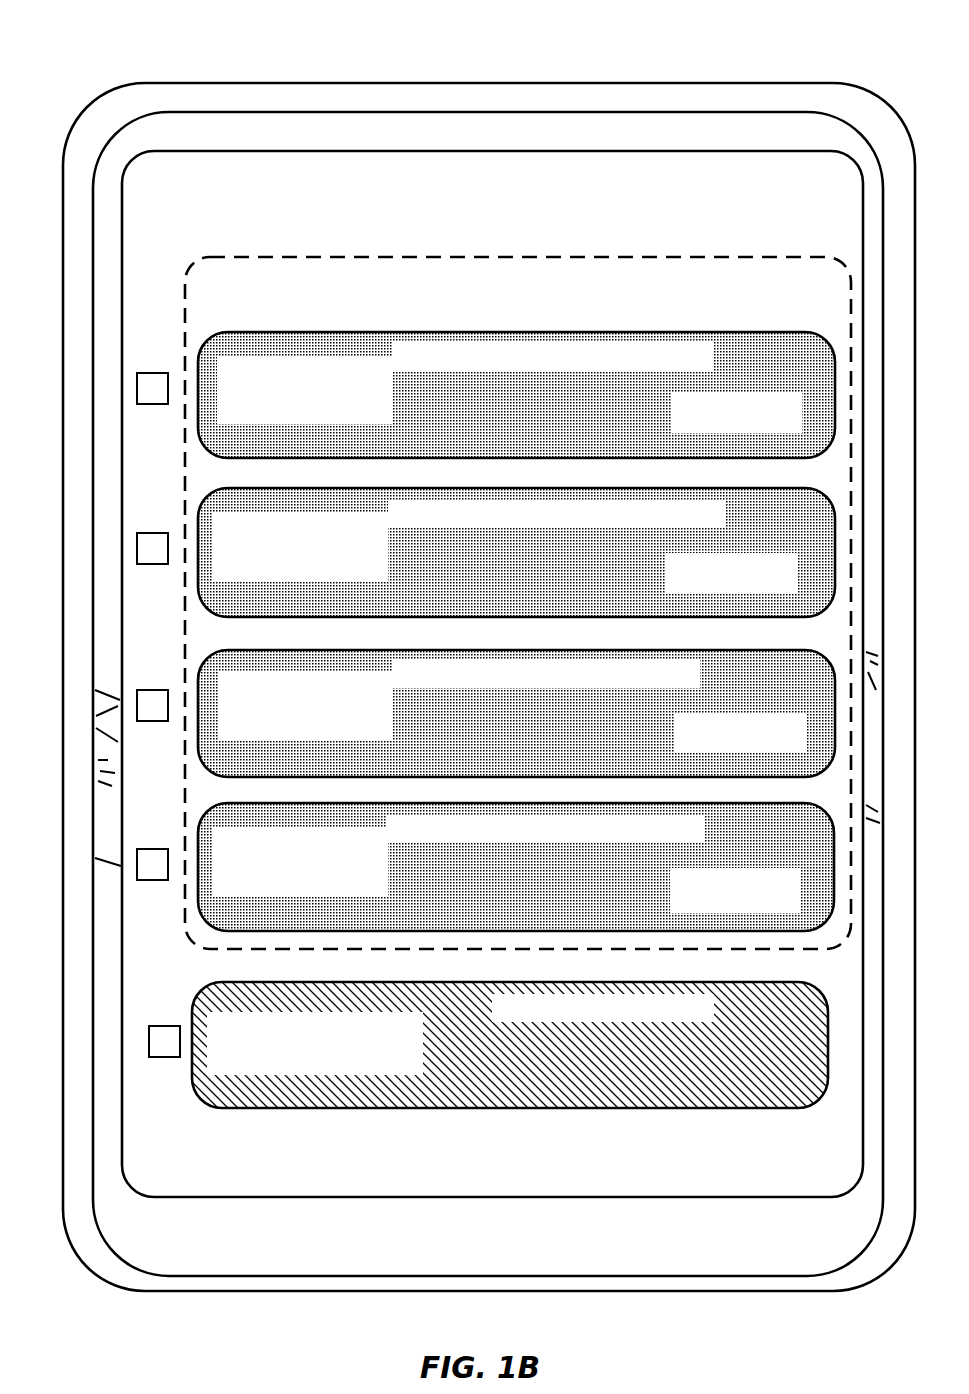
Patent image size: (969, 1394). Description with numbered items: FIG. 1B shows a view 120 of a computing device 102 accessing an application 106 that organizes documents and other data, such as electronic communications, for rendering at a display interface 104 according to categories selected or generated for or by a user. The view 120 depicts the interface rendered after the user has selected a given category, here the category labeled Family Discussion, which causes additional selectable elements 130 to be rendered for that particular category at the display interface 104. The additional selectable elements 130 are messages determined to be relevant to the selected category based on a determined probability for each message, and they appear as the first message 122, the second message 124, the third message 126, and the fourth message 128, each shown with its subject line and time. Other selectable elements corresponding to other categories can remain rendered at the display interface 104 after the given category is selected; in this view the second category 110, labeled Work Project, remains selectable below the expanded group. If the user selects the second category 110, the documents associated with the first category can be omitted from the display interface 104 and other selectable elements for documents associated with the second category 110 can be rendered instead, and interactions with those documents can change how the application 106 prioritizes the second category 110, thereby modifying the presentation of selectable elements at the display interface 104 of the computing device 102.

The view 120 is at (818, 74).
The computing device 102 is at (300, 114).
The display interface 104 is at (737, 191).
The application 106 is at (506, 220).
The additional selectable elements 130 is at (287, 257).
The first message 122 is at (258, 414).
The second message 124 is at (256, 574).
The third message 126 is at (259, 734).
The fourth message 128 is at (256, 890).
The second category 110 is at (250, 1066).